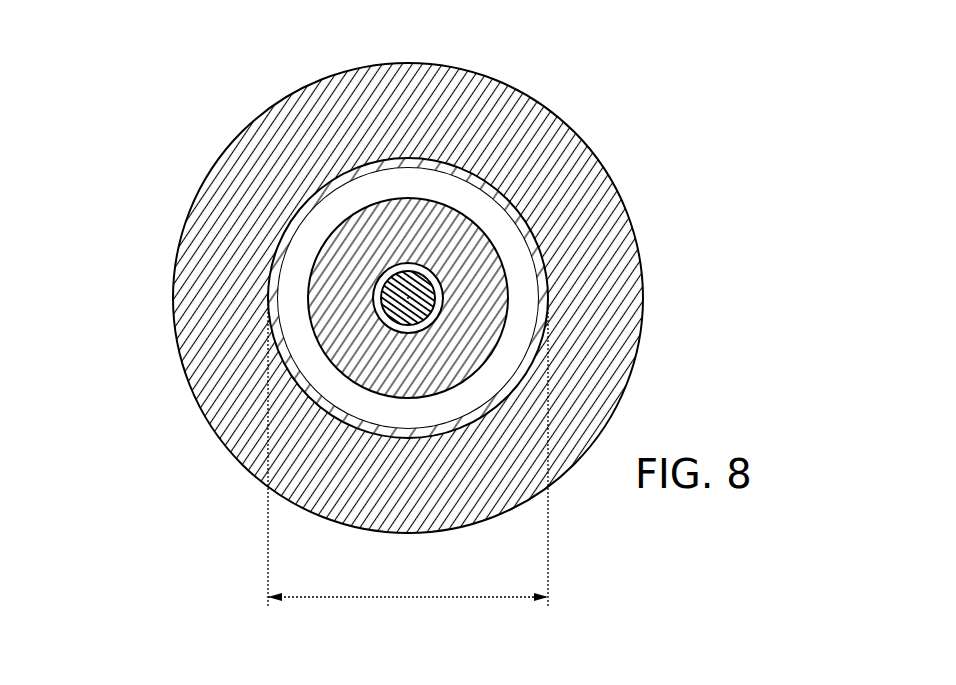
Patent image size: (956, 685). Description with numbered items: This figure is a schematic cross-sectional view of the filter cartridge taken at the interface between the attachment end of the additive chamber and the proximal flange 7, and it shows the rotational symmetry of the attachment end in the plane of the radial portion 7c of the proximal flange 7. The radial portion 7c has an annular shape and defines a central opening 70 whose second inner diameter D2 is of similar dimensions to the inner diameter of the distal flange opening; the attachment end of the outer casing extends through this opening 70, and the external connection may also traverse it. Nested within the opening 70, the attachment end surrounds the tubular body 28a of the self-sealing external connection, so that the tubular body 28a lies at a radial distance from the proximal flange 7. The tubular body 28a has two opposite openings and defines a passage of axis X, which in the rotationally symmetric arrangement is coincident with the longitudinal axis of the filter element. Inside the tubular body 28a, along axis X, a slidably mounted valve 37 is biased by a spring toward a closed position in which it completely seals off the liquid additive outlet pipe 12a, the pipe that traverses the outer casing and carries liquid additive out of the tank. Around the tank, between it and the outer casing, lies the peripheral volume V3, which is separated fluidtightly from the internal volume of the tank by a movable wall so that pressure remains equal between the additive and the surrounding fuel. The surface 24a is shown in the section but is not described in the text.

The proximal flange 7 is at (197, 393).
The radial portion of the proximal flange 7c is at (222, 245).
The outer circumferential surface of bearing ring 24a is at (295, 213).
The central opening 70 is at (545, 223).
The peripheral volume V3 is at (390, 187).
The tubular body 28a is at (468, 287).
The valve 37 is at (402, 296).
The liquid additive outlet pipe 12a is at (421, 272).
The axis of the passage X is at (408, 298).
The second inner diameter D2 is at (408, 463).